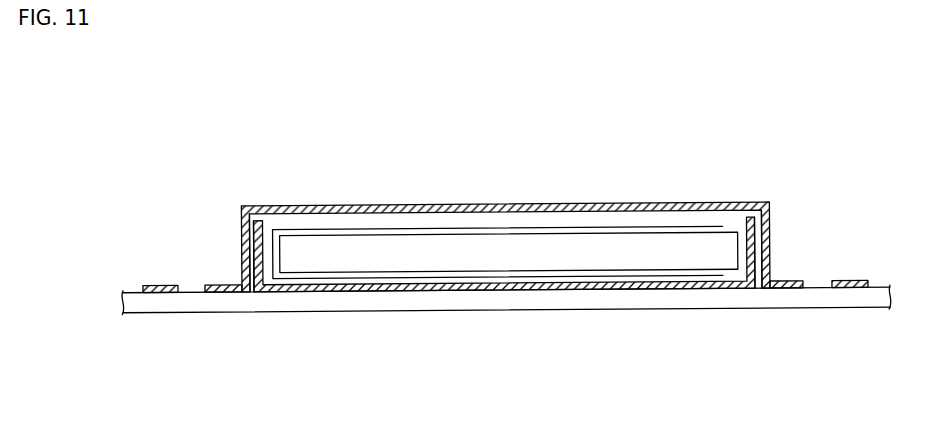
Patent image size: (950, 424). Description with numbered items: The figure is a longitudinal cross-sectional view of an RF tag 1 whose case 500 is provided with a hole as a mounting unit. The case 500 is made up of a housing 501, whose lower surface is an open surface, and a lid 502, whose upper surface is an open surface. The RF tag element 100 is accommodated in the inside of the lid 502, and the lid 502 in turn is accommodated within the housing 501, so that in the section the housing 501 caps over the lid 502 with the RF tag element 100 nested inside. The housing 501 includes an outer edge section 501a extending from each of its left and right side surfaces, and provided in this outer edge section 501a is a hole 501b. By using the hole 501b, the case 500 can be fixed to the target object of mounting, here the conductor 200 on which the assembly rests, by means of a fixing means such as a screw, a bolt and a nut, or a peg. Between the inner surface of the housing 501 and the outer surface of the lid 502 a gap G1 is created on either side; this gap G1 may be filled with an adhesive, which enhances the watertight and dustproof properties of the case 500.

The RF tag 1 is at (855, 128).
The RF tag element 100 is at (634, 225).
The conductor 200 is at (448, 300).
The case 500 is at (505, 243).
The housing 501 is at (347, 204).
The outer edge section 501a is at (158, 283).
The hole 501b is at (195, 283).
The lid 502 is at (570, 285).
The gap G1 is at (253, 291).